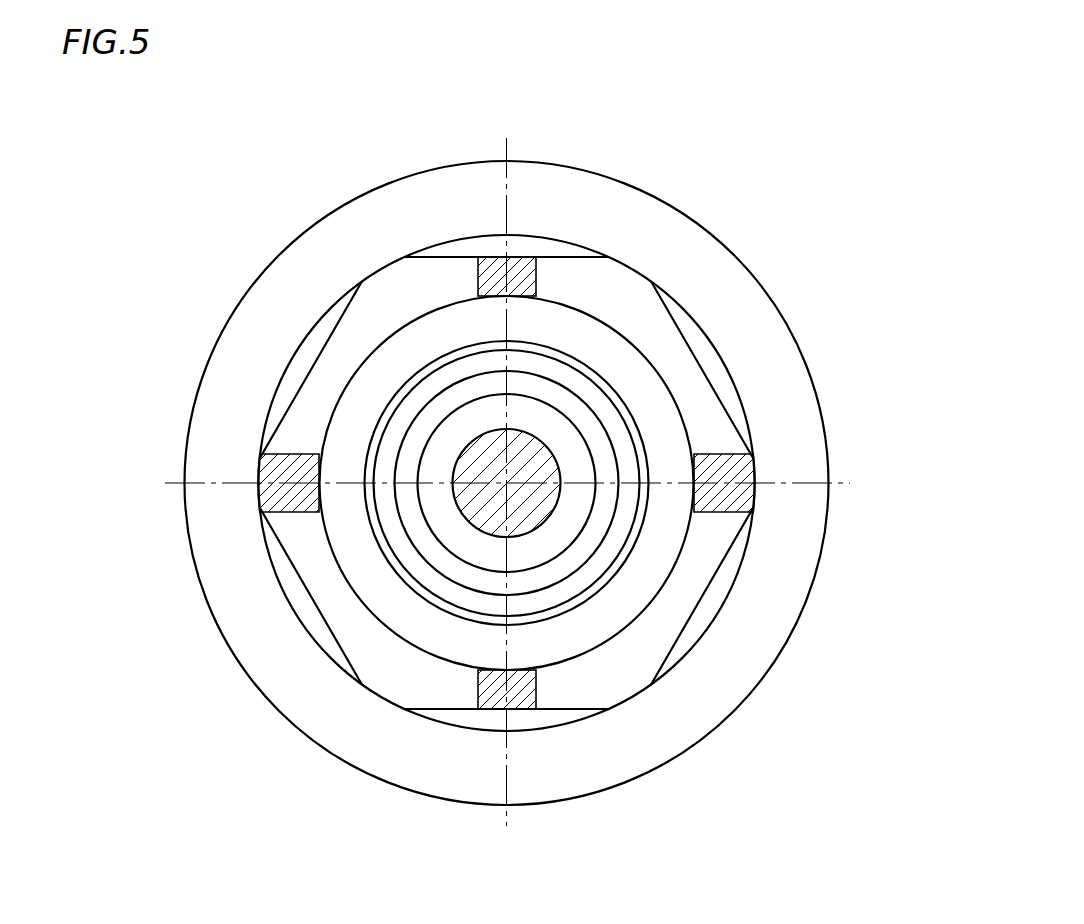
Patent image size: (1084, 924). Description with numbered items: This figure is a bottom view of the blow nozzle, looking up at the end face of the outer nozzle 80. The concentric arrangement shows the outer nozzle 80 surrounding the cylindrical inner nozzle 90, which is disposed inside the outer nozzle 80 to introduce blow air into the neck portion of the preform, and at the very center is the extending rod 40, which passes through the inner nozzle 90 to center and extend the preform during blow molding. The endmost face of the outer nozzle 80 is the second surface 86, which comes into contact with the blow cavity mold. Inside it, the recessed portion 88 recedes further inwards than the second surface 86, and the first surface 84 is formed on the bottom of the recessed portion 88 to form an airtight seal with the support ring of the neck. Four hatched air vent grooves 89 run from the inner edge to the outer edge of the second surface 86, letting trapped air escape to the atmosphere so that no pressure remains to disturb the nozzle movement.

The outer nozzle 80 is at (247, 296).
The second surface 86 is at (623, 680).
The first surface 84 is at (544, 406).
The recessed portion 88 is at (585, 330).
The inner nozzle 90 is at (437, 393).
The extending rod 40 is at (540, 508).
The air vent grooves 89 is at (521, 258).